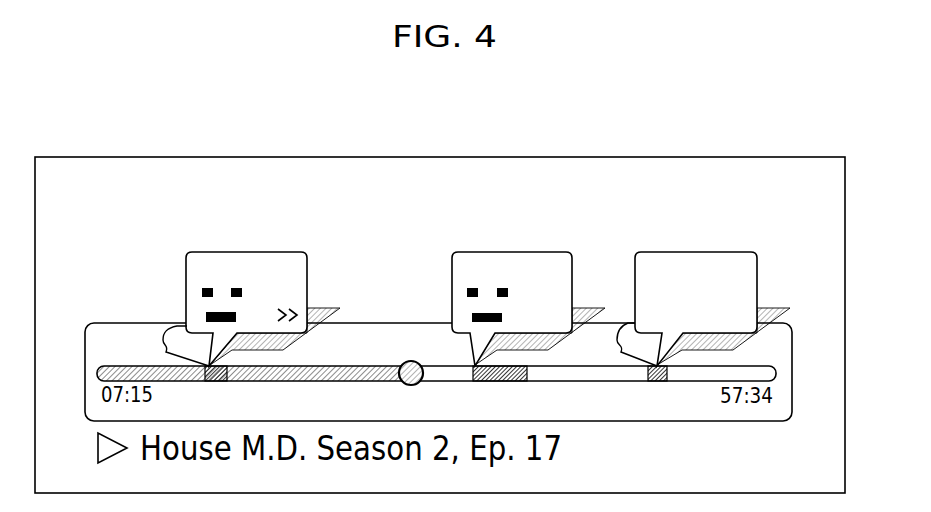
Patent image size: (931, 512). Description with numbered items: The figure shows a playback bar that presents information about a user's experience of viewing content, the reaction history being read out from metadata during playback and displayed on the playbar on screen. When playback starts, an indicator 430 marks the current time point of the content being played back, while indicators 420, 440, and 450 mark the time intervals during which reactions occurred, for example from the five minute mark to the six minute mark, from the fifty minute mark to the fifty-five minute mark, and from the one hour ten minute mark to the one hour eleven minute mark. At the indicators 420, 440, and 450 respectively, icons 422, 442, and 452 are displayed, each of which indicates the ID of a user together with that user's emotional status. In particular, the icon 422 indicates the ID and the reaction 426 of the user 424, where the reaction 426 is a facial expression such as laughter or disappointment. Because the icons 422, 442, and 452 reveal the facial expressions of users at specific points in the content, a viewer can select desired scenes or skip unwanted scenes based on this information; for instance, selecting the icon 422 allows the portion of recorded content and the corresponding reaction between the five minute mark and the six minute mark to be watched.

The indicator 420 is at (177, 326).
The icon 422 is at (257, 252).
The user 424 is at (192, 268).
The reaction 426 is at (243, 290).
The indicator 430 is at (410, 361).
The indicator 440 is at (502, 381).
The icon 442 is at (512, 252).
The indicator 450 is at (628, 323).
The icon 452 is at (697, 252).